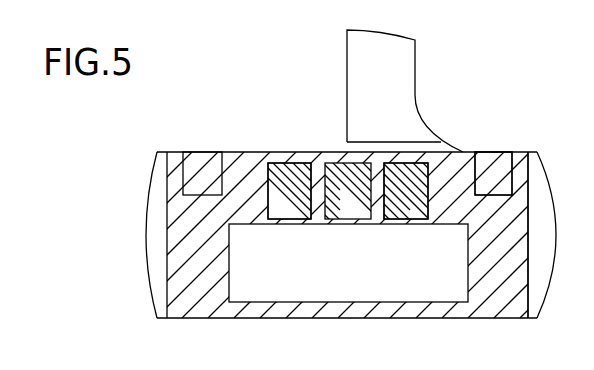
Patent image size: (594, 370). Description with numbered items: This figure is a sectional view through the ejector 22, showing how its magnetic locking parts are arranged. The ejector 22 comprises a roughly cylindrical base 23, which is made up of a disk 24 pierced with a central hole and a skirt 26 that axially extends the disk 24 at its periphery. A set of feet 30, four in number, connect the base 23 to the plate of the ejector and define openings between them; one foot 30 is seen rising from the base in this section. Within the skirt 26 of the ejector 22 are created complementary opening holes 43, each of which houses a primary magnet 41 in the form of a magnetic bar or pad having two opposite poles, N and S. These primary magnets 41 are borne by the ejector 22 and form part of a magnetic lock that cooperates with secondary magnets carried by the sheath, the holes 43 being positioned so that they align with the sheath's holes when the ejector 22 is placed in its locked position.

The ejector 22 is at (297, 199).
The base 23 is at (528, 200).
The disk 24 is at (245, 155).
The skirt 26 is at (523, 255).
The feet 30 is at (414, 61).
The primary magnet 41 is at (328, 222).
The opening hole 43 is at (268, 200).